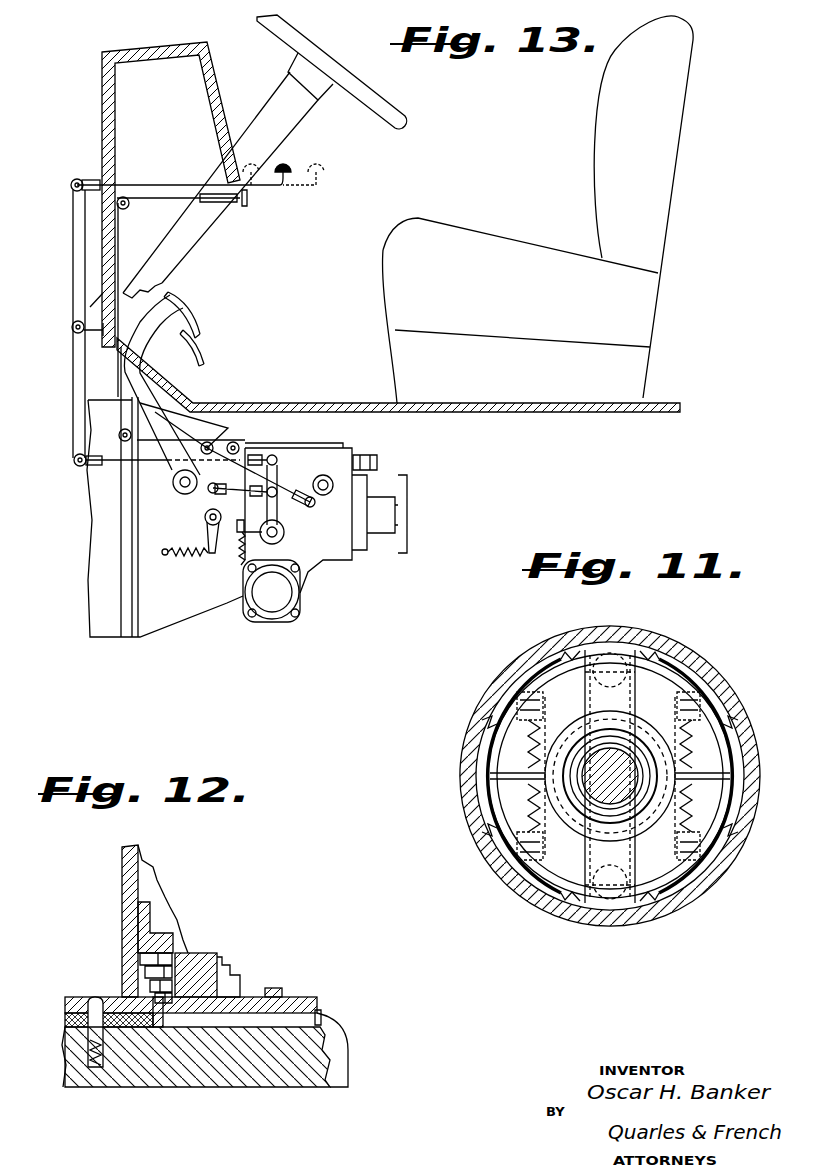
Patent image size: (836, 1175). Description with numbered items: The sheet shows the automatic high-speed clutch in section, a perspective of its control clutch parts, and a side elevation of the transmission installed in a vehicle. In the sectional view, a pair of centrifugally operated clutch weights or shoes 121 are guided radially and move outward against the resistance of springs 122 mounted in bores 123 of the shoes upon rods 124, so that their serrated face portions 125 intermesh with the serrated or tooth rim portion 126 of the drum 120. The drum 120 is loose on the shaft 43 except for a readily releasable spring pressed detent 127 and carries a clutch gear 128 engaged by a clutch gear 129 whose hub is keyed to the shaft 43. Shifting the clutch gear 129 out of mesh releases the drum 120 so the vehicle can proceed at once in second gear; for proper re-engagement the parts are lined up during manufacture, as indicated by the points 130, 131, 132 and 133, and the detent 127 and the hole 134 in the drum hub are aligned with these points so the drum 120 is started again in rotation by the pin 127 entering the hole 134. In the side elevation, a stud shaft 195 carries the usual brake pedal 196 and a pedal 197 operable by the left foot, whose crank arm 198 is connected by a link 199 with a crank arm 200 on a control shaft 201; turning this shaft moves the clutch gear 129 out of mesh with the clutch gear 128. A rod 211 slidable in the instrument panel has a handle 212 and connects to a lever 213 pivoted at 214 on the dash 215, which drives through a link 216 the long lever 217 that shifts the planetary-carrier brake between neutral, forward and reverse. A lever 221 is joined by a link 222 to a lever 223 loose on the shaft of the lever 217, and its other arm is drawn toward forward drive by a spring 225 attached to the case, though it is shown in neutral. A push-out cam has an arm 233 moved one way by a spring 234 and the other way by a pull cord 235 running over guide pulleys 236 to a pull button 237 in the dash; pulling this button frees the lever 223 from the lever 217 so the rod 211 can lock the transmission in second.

In FIG. 13, the rod 211 is at (180, 185).
In FIG. 13, the handle 212 is at (292, 165).
In FIG. 13, the lever 213 is at (73, 290).
In FIG. 13, the pivot 214 is at (72, 335).
In FIG. 13, the dash 215 is at (103, 237).
In FIG. 13, the link 216 is at (116, 464).
In FIG. 13, the long lever 217 is at (278, 466).
In FIG. 13, the lever 221 is at (205, 518).
In FIG. 13, the link 222 is at (232, 492).
In FIG. 13, the lever 223 is at (280, 520).
In FIG. 13, the spring 225 is at (190, 556).
In FIG. 13, the arm 233 is at (250, 540).
In FIG. 13, the spring 234 is at (246, 557).
In FIG. 13, the pull cord 235 is at (205, 410).
In FIG. 13, the guide pulleys 236 is at (126, 210).
In FIG. 13, the pull button 237 is at (250, 198).
In FIG. 13, the stud shaft 195 is at (178, 490).
In FIG. 13, the brake pedal 196 is at (188, 305).
In FIG. 13, the pedal 197 is at (172, 365).
In FIG. 13, the crank arm 198 is at (200, 470).
In FIG. 13, the link 199 is at (277, 490).
In FIG. 13, the crank arm 200 is at (314, 503).
In FIG. 13, the control shaft 201 is at (326, 472).
In FIG. 11, the drum 120 is at (725, 670).
In FIG. 11, the clutch weights or shoes 121 is at (718, 720).
In FIG. 11, the springs 122 is at (520, 795).
In FIG. 11, the bores 123 is at (520, 812).
In FIG. 11, the rods 124 is at (520, 770).
In FIG. 11, the serrated face portions 125 is at (650, 645).
In FIG. 11, the serrated or tooth rim portion 126 is at (680, 655).
In FIG. 12, the spring pressed detent 127 is at (88, 1030).
In FIG. 12, the clutch gear 128 is at (165, 935).
In FIG. 12, the clutch gear 129 is at (198, 962).
In FIG. 12, the alignment point 130 is at (322, 1032).
In FIG. 12, the alignment point 131 is at (318, 1008).
In FIG. 12, the alignment point 132 is at (222, 975).
In FIG. 12, the alignment point 133 is at (176, 952).
In FIG. 12, the hole 134 is at (83, 996).
In FIG. 12, the shaft 43 is at (138, 1078).